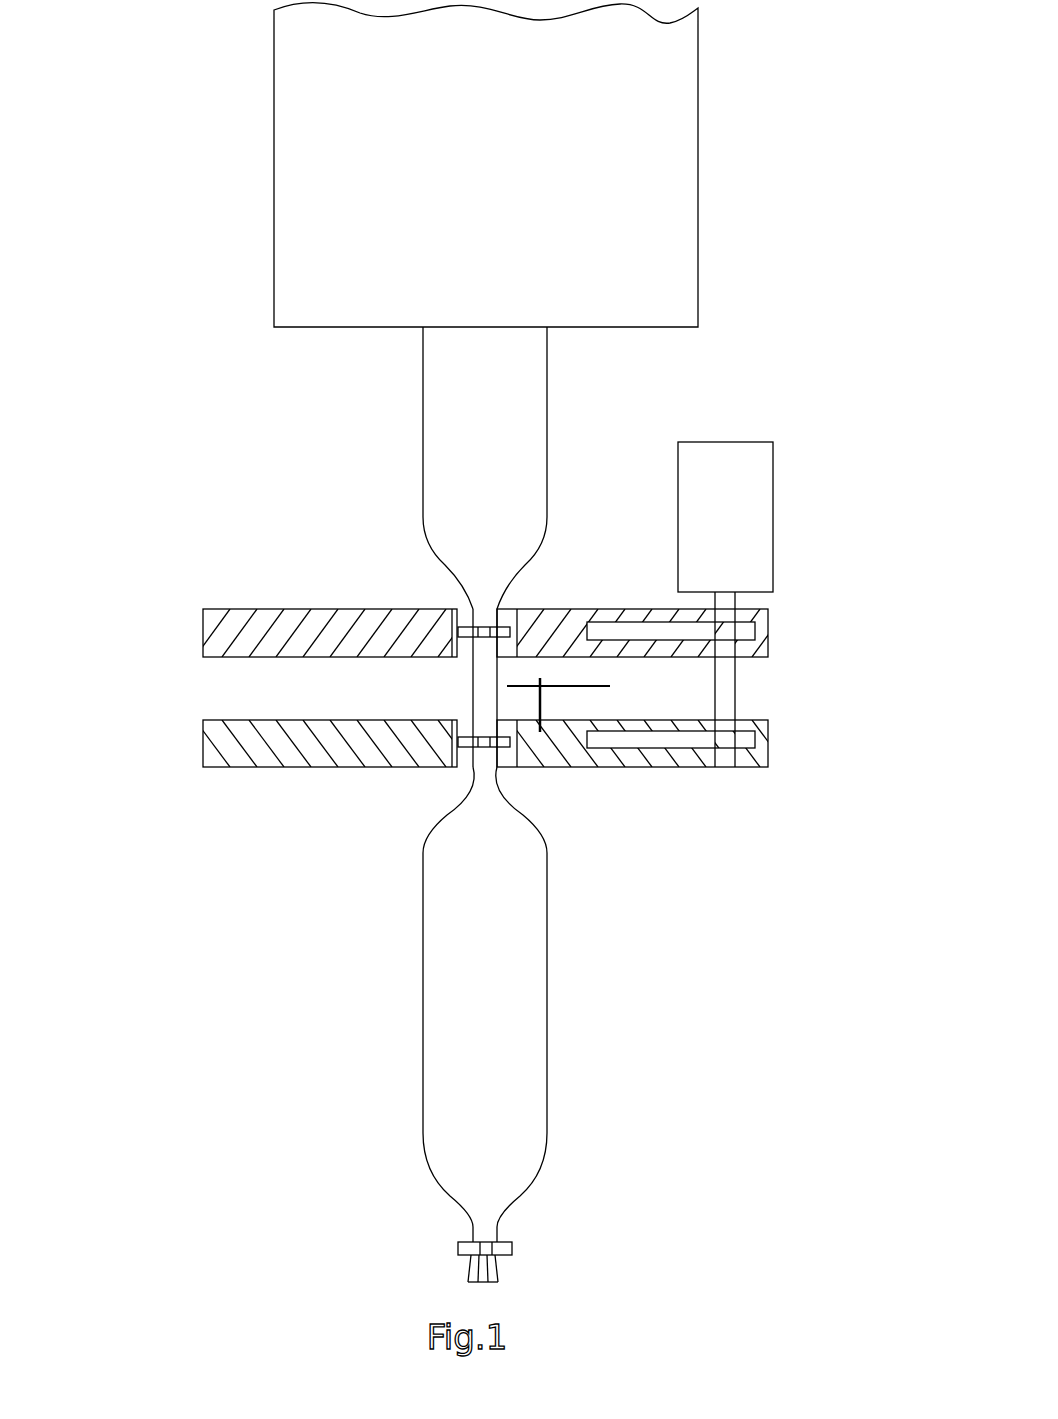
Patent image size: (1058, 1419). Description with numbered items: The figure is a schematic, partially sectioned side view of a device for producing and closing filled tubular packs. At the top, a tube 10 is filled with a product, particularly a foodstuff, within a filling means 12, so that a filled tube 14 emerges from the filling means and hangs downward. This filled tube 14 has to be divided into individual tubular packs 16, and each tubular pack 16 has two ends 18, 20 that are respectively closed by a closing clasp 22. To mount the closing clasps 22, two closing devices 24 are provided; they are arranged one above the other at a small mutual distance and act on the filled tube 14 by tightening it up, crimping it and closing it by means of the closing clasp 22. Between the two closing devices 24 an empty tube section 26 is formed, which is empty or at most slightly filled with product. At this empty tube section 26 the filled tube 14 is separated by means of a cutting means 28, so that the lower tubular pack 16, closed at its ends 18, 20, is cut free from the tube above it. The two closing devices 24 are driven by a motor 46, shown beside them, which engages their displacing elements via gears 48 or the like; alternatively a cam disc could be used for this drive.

The tube 10 is at (474, 821).
The filling means 12 is at (626, 143).
The filled tube 14 is at (457, 447).
The tubular pack 16 is at (452, 1042).
The end of tubular pack 18 is at (448, 778).
The end of tubular pack 20 is at (452, 1263).
The closing clasp 22 is at (510, 606).
The closing device 24 is at (195, 628).
The empty tube section 26 is at (487, 688).
The cutting means 28 is at (560, 690).
The motor 46 is at (757, 512).
The gears 48 is at (745, 745).